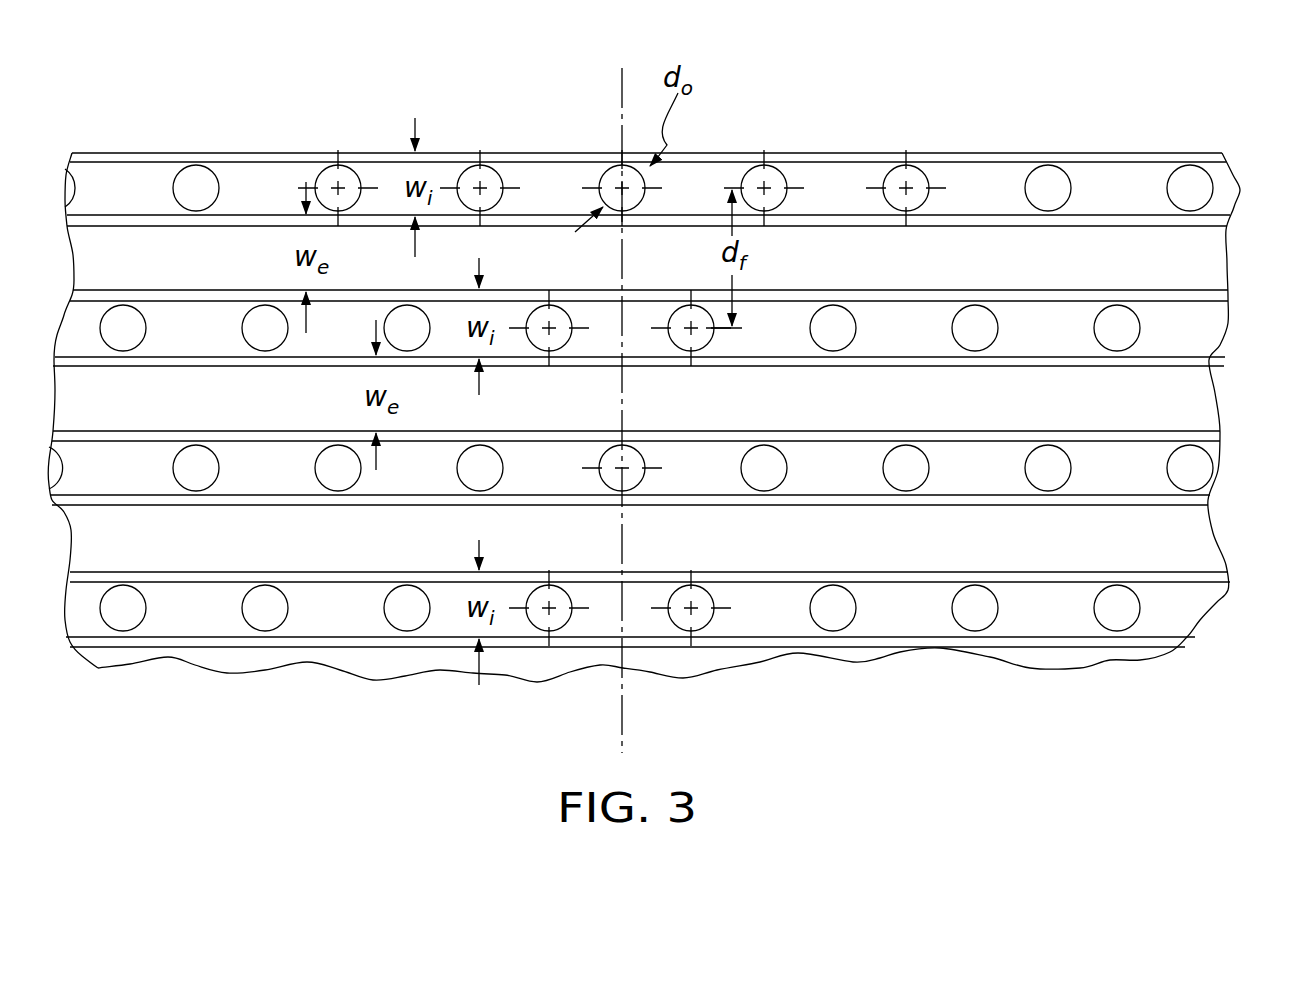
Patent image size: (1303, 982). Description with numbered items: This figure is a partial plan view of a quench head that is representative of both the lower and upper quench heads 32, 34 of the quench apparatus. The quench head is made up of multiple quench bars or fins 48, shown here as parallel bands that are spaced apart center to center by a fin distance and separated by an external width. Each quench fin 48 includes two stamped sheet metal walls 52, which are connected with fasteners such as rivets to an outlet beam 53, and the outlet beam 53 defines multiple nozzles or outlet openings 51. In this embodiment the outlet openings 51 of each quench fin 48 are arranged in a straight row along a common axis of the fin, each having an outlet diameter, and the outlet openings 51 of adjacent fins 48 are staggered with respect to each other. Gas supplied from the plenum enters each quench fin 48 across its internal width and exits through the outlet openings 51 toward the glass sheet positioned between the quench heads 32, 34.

The quench head 32 is at (1184, 98).
The quench head 34 is at (644, 417).
The quench fin 48 is at (1110, 141).
The outlet opening 51 is at (888, 178).
The sheet metal wall 52 is at (1088, 430).
The outlet beam 53 is at (1120, 472).